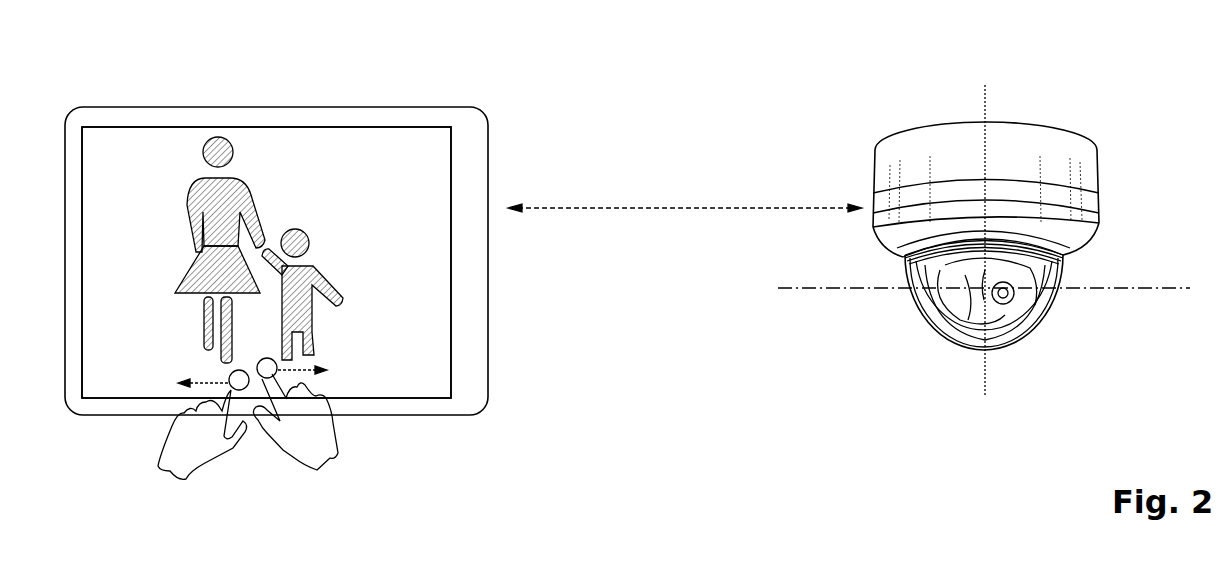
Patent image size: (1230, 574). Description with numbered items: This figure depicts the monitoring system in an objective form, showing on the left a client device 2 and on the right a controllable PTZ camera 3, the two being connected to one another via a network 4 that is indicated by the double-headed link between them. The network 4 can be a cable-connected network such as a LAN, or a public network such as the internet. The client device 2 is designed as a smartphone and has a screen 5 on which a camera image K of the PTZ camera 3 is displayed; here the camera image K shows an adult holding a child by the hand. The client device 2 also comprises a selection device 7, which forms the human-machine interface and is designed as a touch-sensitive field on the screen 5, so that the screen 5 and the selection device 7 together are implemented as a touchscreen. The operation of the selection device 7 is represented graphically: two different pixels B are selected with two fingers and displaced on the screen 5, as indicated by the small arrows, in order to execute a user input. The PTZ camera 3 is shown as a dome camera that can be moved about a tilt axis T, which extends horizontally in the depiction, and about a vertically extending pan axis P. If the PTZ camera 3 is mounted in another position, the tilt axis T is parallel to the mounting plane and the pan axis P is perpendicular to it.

The client device 2 is at (138, 148).
The screen 5 is at (266, 262).
The selection device 7 is at (266, 262).
The PTZ camera 3 is at (1097, 168).
The network 4 is at (690, 205).
The camera image K is at (259, 250).
The pixels B is at (231, 376).
The pan axis P is at (993, 240).
The tilt axis T is at (984, 275).